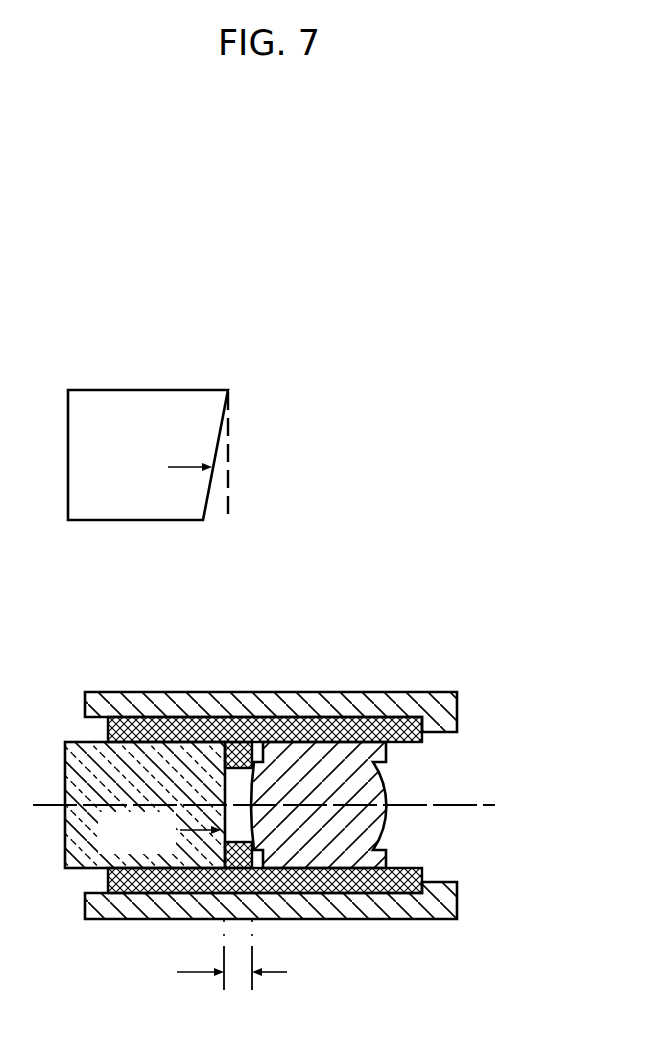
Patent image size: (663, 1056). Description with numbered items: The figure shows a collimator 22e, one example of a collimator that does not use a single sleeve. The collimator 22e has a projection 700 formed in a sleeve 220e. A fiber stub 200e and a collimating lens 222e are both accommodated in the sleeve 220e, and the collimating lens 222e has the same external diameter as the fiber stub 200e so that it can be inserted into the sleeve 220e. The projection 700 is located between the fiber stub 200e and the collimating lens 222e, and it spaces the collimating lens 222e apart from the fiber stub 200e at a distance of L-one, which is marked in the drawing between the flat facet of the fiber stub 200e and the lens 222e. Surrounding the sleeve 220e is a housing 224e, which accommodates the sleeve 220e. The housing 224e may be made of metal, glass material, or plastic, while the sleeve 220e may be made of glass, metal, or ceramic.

The collimator 22e is at (346, 384).
The fiber stub 200e is at (140, 763).
The projection 700 is at (243, 728).
The sleeve 220e is at (367, 725).
The collimating lens 222e is at (343, 830).
The housing 224e is at (455, 893).